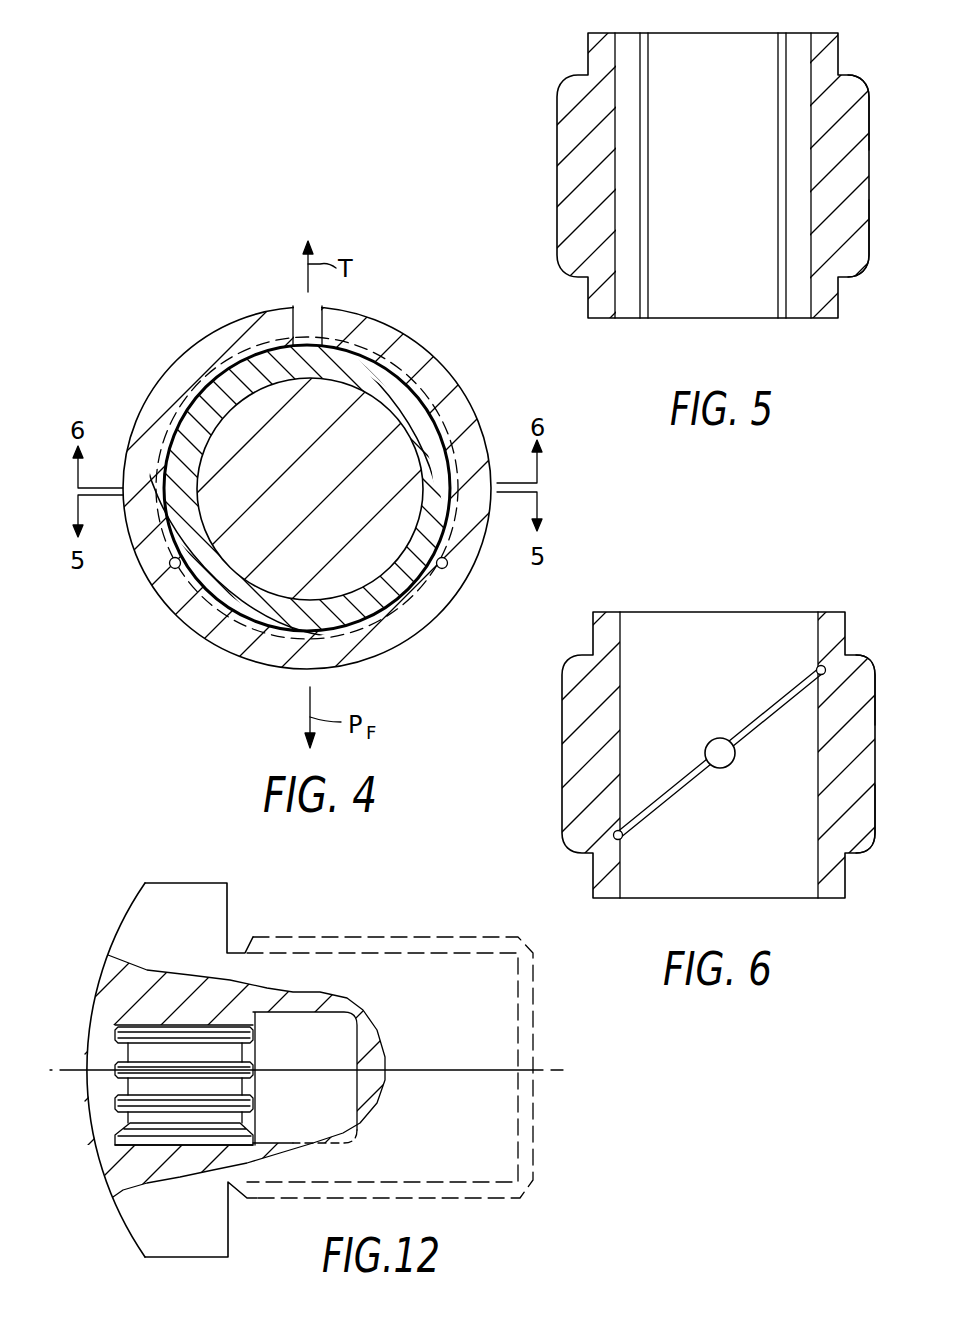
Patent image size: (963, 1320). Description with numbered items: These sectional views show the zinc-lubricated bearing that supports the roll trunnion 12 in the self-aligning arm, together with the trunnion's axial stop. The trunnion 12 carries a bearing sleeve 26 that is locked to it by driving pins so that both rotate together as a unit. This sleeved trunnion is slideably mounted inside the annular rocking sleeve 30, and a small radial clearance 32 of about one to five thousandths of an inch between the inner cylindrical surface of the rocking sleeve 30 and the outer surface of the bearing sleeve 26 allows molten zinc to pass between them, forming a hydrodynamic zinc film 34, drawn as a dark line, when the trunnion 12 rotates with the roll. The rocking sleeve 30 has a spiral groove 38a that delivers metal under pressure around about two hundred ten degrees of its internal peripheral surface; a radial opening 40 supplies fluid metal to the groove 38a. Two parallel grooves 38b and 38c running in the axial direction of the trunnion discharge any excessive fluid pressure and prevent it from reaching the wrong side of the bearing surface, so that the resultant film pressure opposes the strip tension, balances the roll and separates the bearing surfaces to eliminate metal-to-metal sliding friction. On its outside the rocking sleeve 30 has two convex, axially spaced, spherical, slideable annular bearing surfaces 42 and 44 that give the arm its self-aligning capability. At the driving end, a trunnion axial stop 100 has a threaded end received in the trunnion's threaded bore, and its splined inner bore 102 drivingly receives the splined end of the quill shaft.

In FIG. 4, the trunnion 12 is at (394, 477).
In FIG. 4, the bearing sleeve 26 is at (430, 433).
In FIG. 5, the rocking sleeve 30 is at (590, 303).
In FIG. 6, the rocking sleeve 30 is at (582, 705).
In FIG. 4, the clearance 32 is at (432, 408).
In FIG. 4, the hydrodynamic zinc film 34 is at (413, 382).
In FIG. 4, the spiral groove 38a is at (216, 370).
In FIG. 6, the spiral groove 38a is at (802, 684).
In FIG. 4, the parallel groove 38b is at (443, 569).
In FIG. 5, the parallel groove 38b is at (785, 318).
In FIG. 4, the parallel groove 38c is at (172, 569).
In FIG. 5, the parallel groove 38c is at (642, 318).
In FIG. 4, the radial opening 40 is at (320, 337).
In FIG. 6, the radial opening 40 is at (717, 747).
In FIG. 5, the annular bearing surface 42 is at (862, 76).
In FIG. 6, the annular bearing surface 42 is at (862, 655).
In FIG. 5, the annular bearing surface 44 is at (866, 270).
In FIG. 6, the annular bearing surface 44 is at (867, 851).
In FIG. 12, the trunnion axial stop 100 is at (227, 883).
In FIG. 12, the splined inner bore 102 is at (103, 1113).